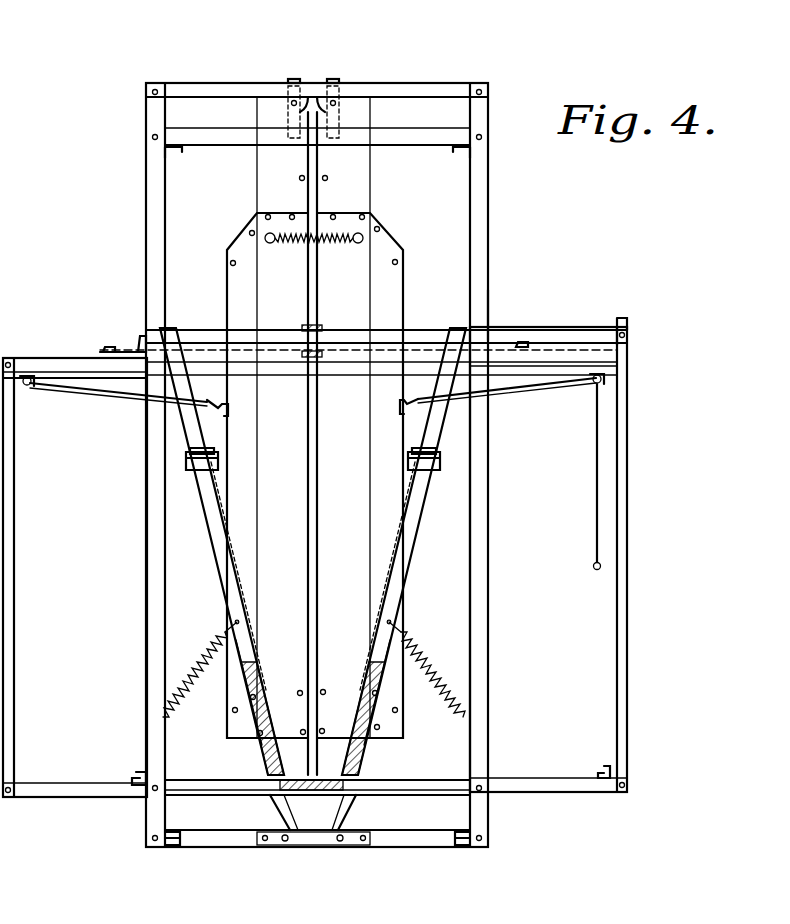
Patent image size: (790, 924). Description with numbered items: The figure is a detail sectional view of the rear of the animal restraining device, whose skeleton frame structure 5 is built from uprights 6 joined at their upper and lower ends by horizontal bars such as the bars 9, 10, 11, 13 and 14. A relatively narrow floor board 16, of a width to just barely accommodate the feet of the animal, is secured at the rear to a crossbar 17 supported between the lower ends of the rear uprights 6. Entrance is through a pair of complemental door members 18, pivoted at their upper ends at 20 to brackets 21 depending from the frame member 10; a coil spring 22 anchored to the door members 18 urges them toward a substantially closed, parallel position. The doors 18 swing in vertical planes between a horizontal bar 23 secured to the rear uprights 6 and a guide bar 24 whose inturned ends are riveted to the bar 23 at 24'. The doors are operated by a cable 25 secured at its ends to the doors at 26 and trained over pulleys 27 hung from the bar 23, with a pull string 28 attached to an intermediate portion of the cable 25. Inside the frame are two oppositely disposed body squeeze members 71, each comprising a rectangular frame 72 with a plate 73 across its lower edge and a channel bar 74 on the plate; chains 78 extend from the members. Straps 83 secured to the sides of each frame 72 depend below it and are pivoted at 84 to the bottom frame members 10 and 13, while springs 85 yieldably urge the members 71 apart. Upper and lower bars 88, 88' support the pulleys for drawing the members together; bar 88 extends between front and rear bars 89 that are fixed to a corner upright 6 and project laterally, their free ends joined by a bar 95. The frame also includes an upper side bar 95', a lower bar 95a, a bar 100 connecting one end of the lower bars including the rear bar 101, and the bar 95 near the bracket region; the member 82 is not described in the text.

The skeleton frame structure 5 is at (498, 312).
The uprights 6 is at (146, 590).
The horizontal bar 9 is at (168, 152).
The horizontal bar 10 is at (428, 82).
The horizontal bar 11 is at (422, 142).
The horizontal bar 13 is at (230, 845).
The horizontal bars 14 is at (170, 848).
The floor board 16 is at (315, 780).
The crossbar 17 is at (410, 780).
The door members 18 is at (230, 300).
The pivots 20 is at (290, 104).
The brackets 21 is at (333, 79).
The coil spring 22 is at (297, 245).
The horizontal bar 23 is at (40, 358).
The guide bar 24 is at (358, 305).
The riveted ends 24' is at (323, 320).
The cable 25 is at (103, 388).
The cable attachments 26 is at (226, 416).
The pulleys 27 is at (27, 387).
The pull string 28 is at (595, 535).
The body squeeze members 71 is at (218, 458).
The rectangular frame 72 is at (216, 582).
The plate 73 is at (278, 702).
The channel bar 74 is at (262, 662).
The chains 78 is at (240, 590).
The leg brackets 82 is at (186, 462).
The straps 83 is at (280, 811).
The pivots 84 is at (287, 846).
The springs 85 is at (445, 642).
The upper bar 88 is at (326, 313).
The lower bar 88' is at (327, 380).
The front and rear bars 89 is at (416, 331).
The bar 95 is at (649, 319).
The upper side bar 95' is at (129, 319).
The lower bar 95a is at (136, 776).
The bar 100 is at (604, 770).
The rear bar 101 is at (530, 793).